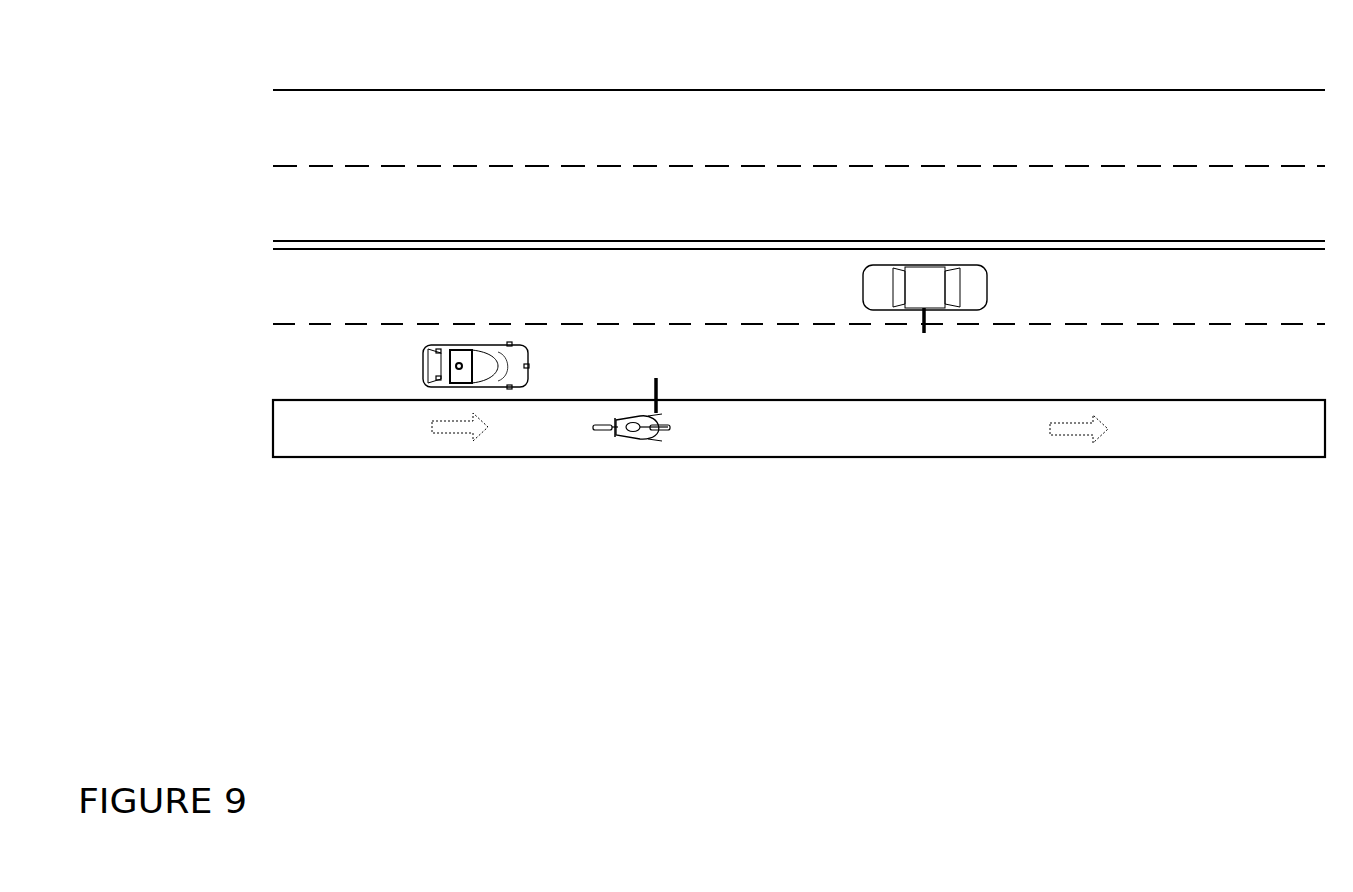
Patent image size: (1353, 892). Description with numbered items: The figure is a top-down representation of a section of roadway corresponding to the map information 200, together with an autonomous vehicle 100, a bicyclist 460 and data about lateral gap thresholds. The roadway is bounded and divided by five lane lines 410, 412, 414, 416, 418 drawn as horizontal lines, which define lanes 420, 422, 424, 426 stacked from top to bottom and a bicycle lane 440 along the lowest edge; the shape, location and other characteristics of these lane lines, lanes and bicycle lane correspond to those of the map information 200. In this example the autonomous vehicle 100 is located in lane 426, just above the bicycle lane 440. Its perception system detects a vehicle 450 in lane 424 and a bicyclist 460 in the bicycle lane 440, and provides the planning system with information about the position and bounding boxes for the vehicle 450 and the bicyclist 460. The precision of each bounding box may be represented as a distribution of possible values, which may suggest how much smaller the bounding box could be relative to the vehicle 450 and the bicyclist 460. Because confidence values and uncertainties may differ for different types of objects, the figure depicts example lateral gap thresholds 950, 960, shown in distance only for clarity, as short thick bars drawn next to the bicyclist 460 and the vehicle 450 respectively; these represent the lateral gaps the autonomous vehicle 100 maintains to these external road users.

The autonomous vehicle 100 is at (423, 376).
The map information 200 is at (182, 759).
The lane line 410 is at (273, 90).
The lane line 412 is at (273, 166).
The lane line 414 is at (273, 250).
The lane line 416 is at (273, 324).
The lane line 418 is at (273, 400).
The lane 420 is at (407, 137).
The lane 422 is at (407, 214).
The lane 424 is at (407, 299).
The lane 426 is at (407, 374).
The bicycle lane 440 is at (822, 439).
The vehicle 450 is at (862, 292).
The bicyclist 460 is at (590, 427).
The lateral gap threshold 950 is at (660, 383).
The lateral gap threshold 960 is at (925, 333).